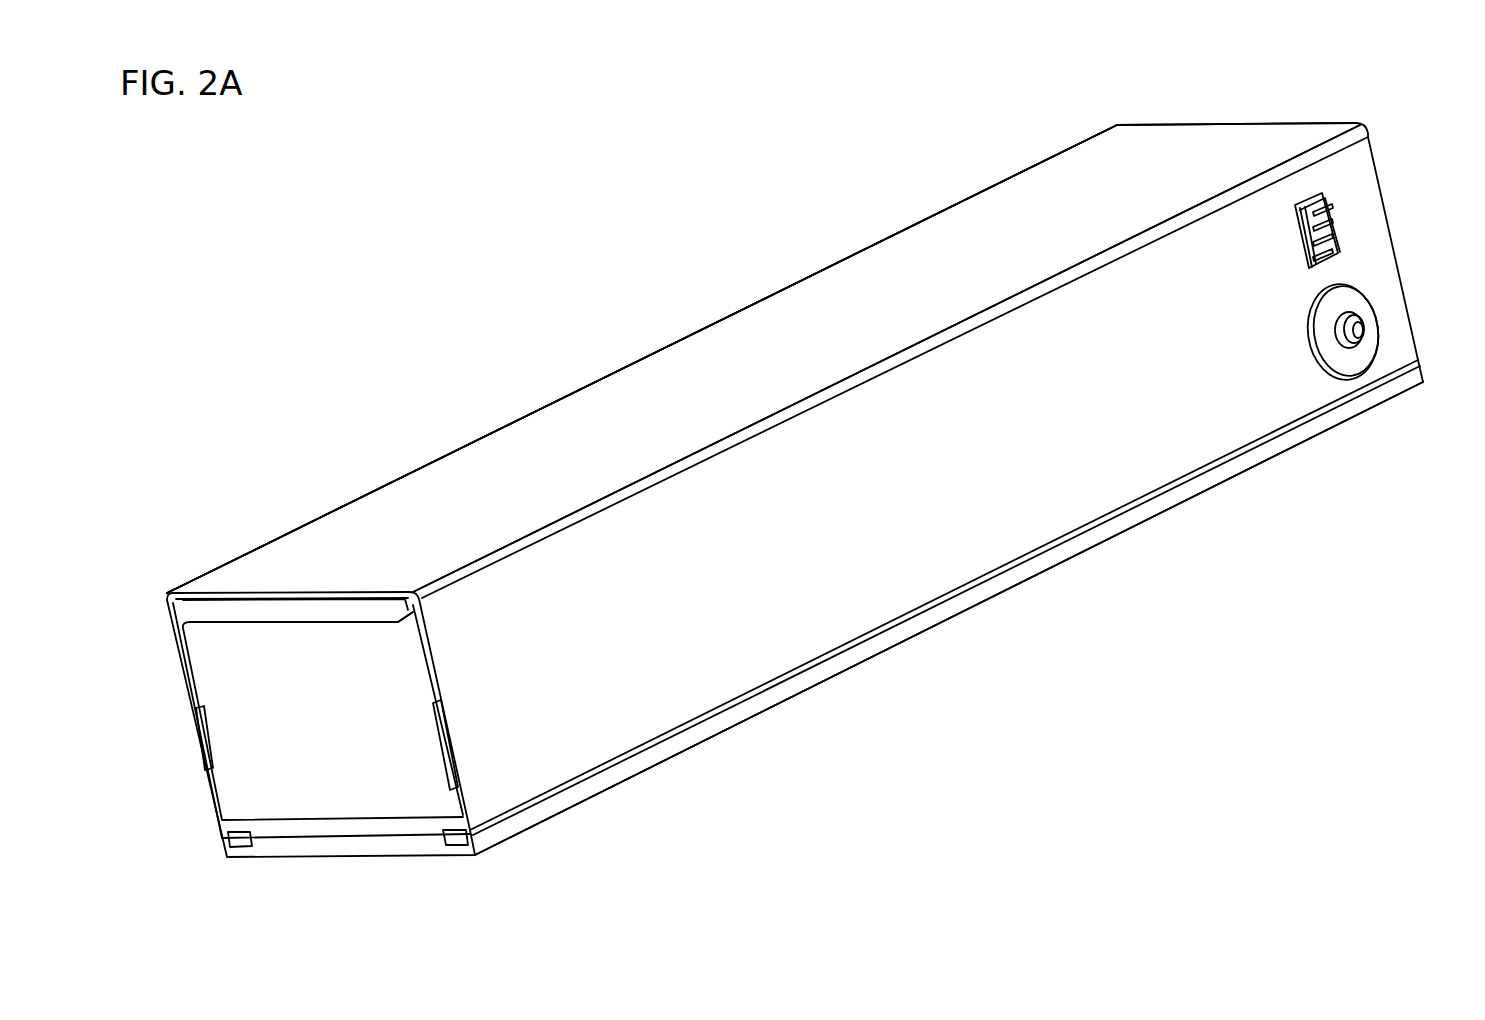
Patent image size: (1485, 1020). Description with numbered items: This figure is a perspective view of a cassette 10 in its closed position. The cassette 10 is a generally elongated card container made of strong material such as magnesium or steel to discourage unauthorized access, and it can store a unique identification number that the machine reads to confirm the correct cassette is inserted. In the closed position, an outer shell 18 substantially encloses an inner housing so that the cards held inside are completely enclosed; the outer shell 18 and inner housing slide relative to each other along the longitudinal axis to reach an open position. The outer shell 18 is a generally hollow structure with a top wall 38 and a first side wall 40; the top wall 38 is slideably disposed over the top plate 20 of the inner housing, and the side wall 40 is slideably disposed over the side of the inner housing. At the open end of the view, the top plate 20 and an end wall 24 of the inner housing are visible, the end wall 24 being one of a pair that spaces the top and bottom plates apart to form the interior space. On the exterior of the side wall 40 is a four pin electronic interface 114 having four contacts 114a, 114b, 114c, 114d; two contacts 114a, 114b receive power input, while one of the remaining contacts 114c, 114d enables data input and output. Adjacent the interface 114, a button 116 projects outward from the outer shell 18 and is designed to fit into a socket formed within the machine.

The cassette 10 is at (1041, 647).
The outer shell 18 is at (736, 330).
The top plate 20 is at (228, 610).
The end wall 24 is at (250, 773).
The top wall 38 is at (527, 440).
The first side wall 40 is at (1087, 487).
The four pin electronic interface 114 is at (1338, 220).
The contact 114a is at (1337, 253).
The contact 114b is at (1308, 248).
The contact 114c is at (1310, 210).
The contact 114d is at (1312, 210).
The button 116 is at (1333, 363).